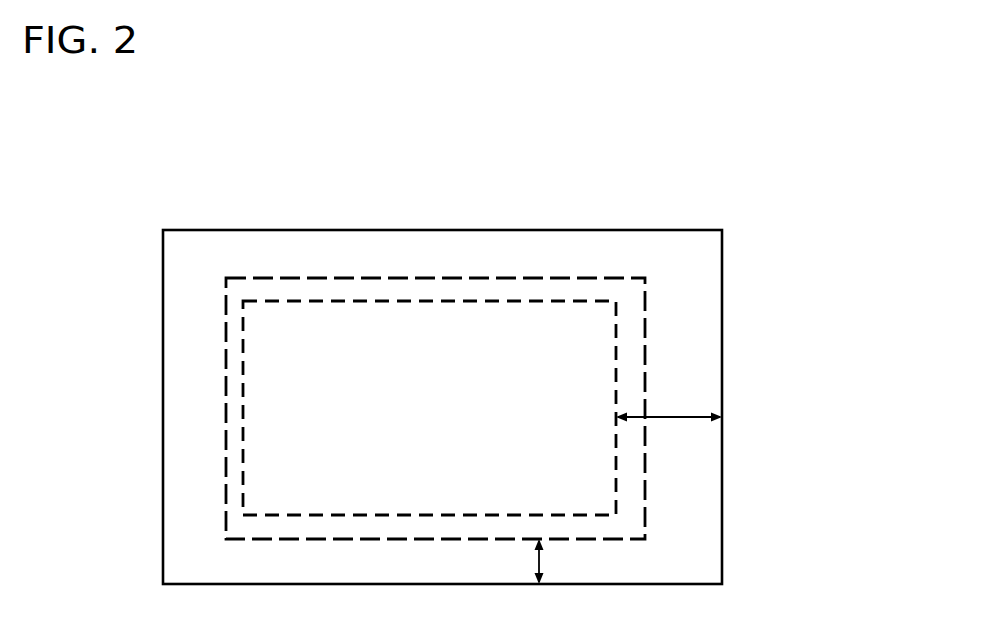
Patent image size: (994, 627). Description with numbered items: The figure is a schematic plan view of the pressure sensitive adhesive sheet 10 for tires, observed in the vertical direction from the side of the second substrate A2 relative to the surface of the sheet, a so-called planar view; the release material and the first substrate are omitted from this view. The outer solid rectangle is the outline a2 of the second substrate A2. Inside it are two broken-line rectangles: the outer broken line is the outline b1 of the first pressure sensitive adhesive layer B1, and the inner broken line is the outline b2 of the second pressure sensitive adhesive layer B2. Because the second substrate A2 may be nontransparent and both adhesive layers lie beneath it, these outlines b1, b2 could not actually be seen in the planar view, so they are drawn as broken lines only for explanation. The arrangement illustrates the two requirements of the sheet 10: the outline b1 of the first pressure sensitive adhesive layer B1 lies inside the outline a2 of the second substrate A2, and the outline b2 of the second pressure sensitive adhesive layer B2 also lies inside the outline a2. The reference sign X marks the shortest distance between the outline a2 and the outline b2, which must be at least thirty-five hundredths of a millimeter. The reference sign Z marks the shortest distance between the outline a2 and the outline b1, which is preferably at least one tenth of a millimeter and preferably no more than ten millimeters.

The pressure sensitive adhesive sheet for tires 10 is at (552, 175).
The second substrate A2 is at (672, 272).
The outline of the second substrate a2 is at (722, 360).
The first pressure sensitive adhesive layer B1 is at (237, 523).
The outline of the first pressure sensitive adhesive layer b1 is at (645, 525).
The second pressure sensitive adhesive layer B2 is at (262, 407).
The outline of the second pressure sensitive adhesive layer b2 is at (618, 457).
The shortest distance between outline a2 and outline b2 X is at (669, 407).
The shortest distance between outline a2 and outline b1 Z is at (552, 561).